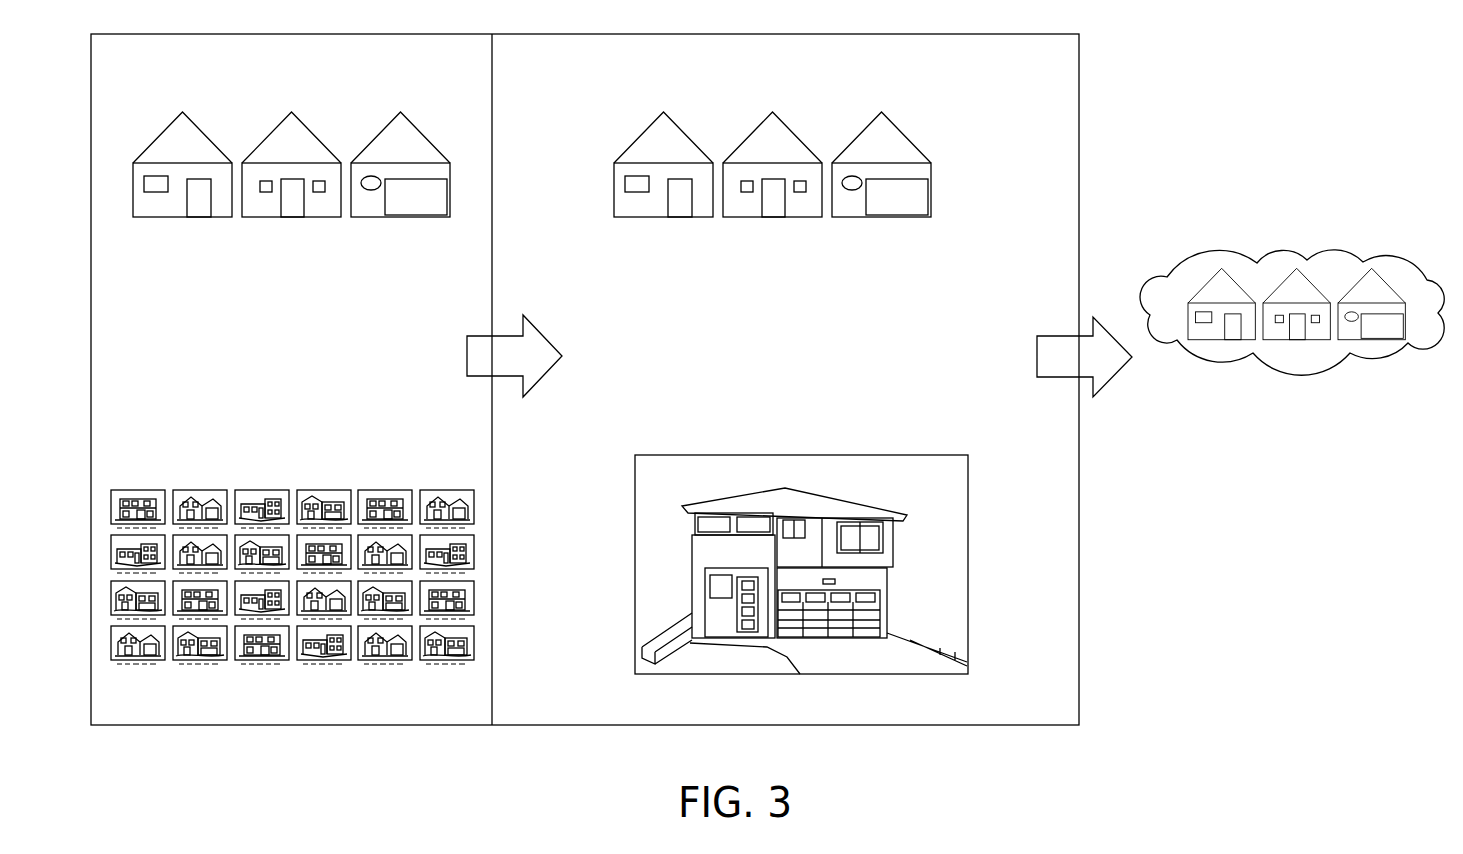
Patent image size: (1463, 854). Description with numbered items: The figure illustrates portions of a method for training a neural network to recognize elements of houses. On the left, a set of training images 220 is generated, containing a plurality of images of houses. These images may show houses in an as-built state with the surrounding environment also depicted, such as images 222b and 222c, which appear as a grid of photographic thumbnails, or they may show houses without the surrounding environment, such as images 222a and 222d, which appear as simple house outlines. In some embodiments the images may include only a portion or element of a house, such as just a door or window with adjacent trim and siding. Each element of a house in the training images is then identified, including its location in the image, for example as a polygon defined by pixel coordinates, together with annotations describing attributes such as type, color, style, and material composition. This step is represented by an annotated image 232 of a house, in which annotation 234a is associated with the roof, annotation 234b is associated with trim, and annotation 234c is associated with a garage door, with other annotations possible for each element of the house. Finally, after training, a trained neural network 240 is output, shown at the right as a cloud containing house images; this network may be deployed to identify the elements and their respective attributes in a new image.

The set of training images 220 is at (258, 725).
The image of house without surrounding environment 222a is at (180, 218).
The image of house in as-built state with surrounding environment 222b is at (140, 491).
The image of house in as-built state with surrounding environment 222c is at (208, 491).
The image of house without surrounding environment 222d is at (401, 112).
The annotated image 232 is at (840, 548).
The annotation with respect to the roof 234a is at (815, 500).
The annotation with respect to trim 234b is at (883, 524).
The annotation with respect to a garage door 234c is at (833, 627).
The trained neural network 240 is at (1328, 250).